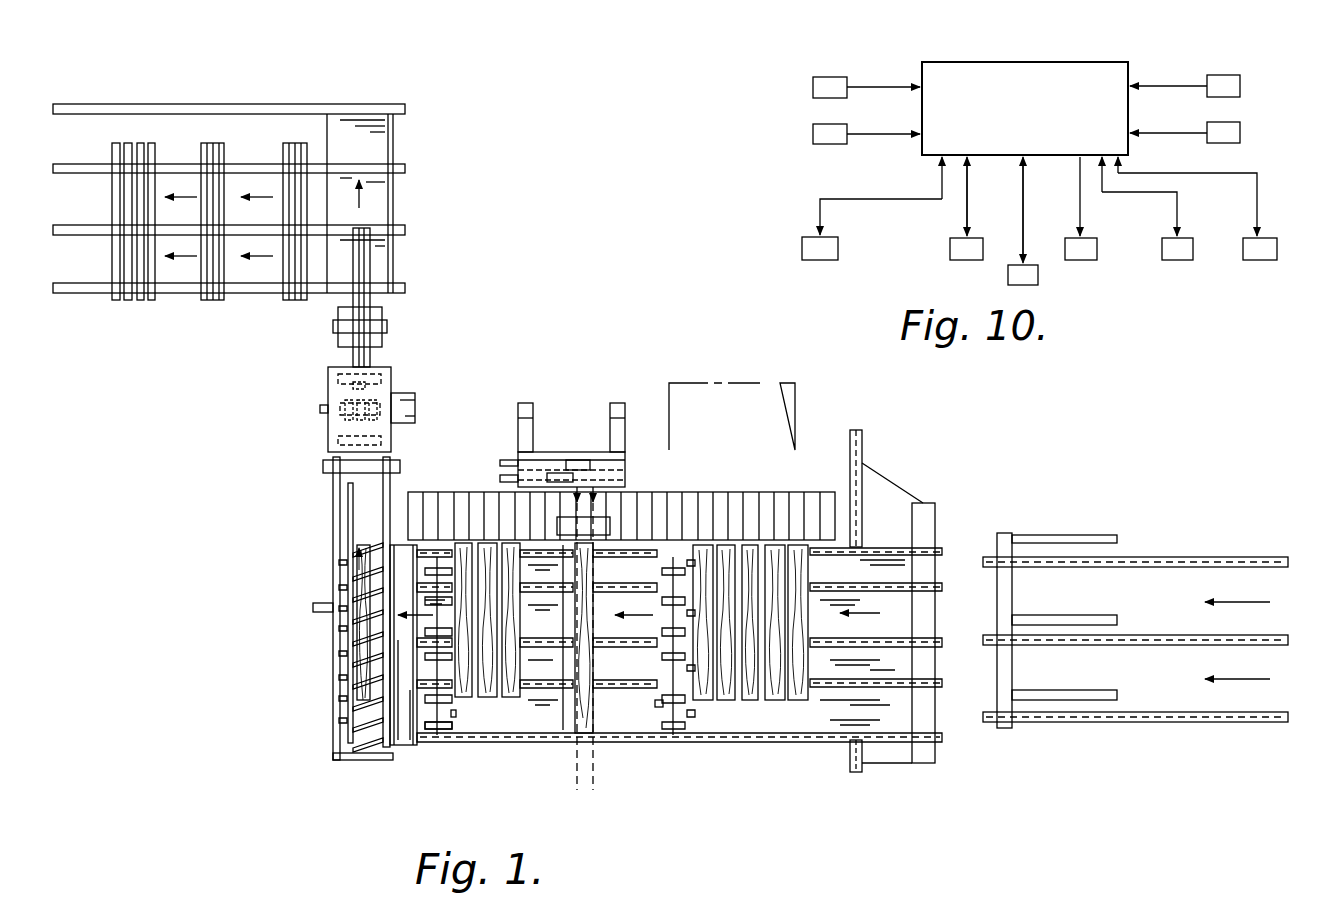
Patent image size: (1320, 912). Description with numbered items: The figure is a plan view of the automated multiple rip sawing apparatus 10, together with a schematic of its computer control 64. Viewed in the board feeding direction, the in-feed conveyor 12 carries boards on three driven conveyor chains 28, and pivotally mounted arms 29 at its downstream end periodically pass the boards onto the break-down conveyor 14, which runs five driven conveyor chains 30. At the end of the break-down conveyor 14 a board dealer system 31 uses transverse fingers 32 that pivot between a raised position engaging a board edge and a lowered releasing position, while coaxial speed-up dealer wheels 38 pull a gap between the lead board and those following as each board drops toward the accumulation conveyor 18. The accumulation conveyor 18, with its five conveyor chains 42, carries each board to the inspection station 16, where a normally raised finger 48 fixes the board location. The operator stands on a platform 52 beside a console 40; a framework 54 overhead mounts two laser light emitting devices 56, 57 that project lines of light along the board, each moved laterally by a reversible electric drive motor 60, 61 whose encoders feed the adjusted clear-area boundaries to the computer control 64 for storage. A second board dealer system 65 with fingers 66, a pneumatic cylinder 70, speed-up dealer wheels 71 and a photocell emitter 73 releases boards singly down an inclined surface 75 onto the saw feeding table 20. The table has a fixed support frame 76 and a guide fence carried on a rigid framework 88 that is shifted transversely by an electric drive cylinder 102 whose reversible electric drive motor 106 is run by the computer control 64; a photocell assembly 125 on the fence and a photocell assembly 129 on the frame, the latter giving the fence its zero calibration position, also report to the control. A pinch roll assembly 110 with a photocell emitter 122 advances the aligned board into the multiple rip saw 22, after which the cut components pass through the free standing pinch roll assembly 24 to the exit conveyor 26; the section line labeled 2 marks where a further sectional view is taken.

In FIG. 1, the automated multiple rip sawing apparatus 10 is at (815, 423).
In FIG. 1, the in-feed conveyor 12 is at (1140, 628).
In FIG. 1, the break-down conveyor 14 is at (691, 621).
In FIG. 1, the inspection station 16 is at (548, 520).
In FIG. 1, the accumulation conveyor 18 is at (562, 745).
In FIG. 1, the saw feeding table 20 is at (322, 608).
In FIG. 1, the multiple rip saw 22 is at (327, 395).
In FIG. 1, the free standing pinch roll assembly 24 is at (330, 334).
In FIG. 1, the exit conveyor 26 is at (172, 308).
In FIG. 1, the driven conveyor chains 28 is at (1160, 557).
In FIG. 1, the pivotally mounted arms 29 is at (1083, 615).
In FIG. 1, the driven conveyor chains 30 is at (945, 575).
In FIG. 1, the board dealer system 31 is at (665, 745).
In FIG. 1, the transverse fingers 32 is at (695, 713).
In FIG. 1, the speed-up dealer wheels 38 is at (660, 705).
In FIG. 1, the console 40 is at (607, 527).
In FIG. 10, the console 40 is at (1038, 277).
In FIG. 1, the conveyor chains 42 is at (600, 762).
In FIG. 1, the finger 48 is at (563, 622).
In FIG. 1, the platform 52 is at (752, 500).
In FIG. 1, the framework 54 is at (547, 439).
In FIG. 1, the laser light emitting device 56 is at (556, 473).
In FIG. 1, the laser light emitting device 57 is at (578, 460).
In FIG. 10, the reversible electric drive motor 60 is at (1230, 80).
In FIG. 10, the reversible electric drive motor 61 is at (1228, 128).
In FIG. 1, the computer control 64 is at (747, 430).
In FIG. 10, the computer control 64 is at (1005, 62).
In FIG. 1, the second board dealer system 65 is at (445, 738).
In FIG. 1, the fingers 66 is at (456, 716).
In FIG. 10, the pneumatic cylinder 70 is at (1097, 250).
In FIG. 1, the speed-up dealer wheels 71 is at (415, 745).
In FIG. 10, the photocell emitter 73 is at (1175, 260).
In FIG. 1, the inclined surface 75 is at (400, 760).
In FIG. 10, the fixed support frame 76 is at (1258, 260).
In FIG. 1, the rigid framework 88 is at (346, 502).
In FIG. 1, the electric drive cylinder 102 is at (320, 602).
In FIG. 10, the reversible electric drive motor 106 is at (950, 250).
In FIG. 1, the pinch roll assembly 110 is at (321, 466).
In FIG. 10, the photocell emitter 122 is at (828, 78).
In FIG. 10, the photocell assembly 125 is at (828, 144).
In FIG. 10, the photocell assembly 129 is at (818, 260).
In FIG. 1, the section line 2 is at (437, 772).